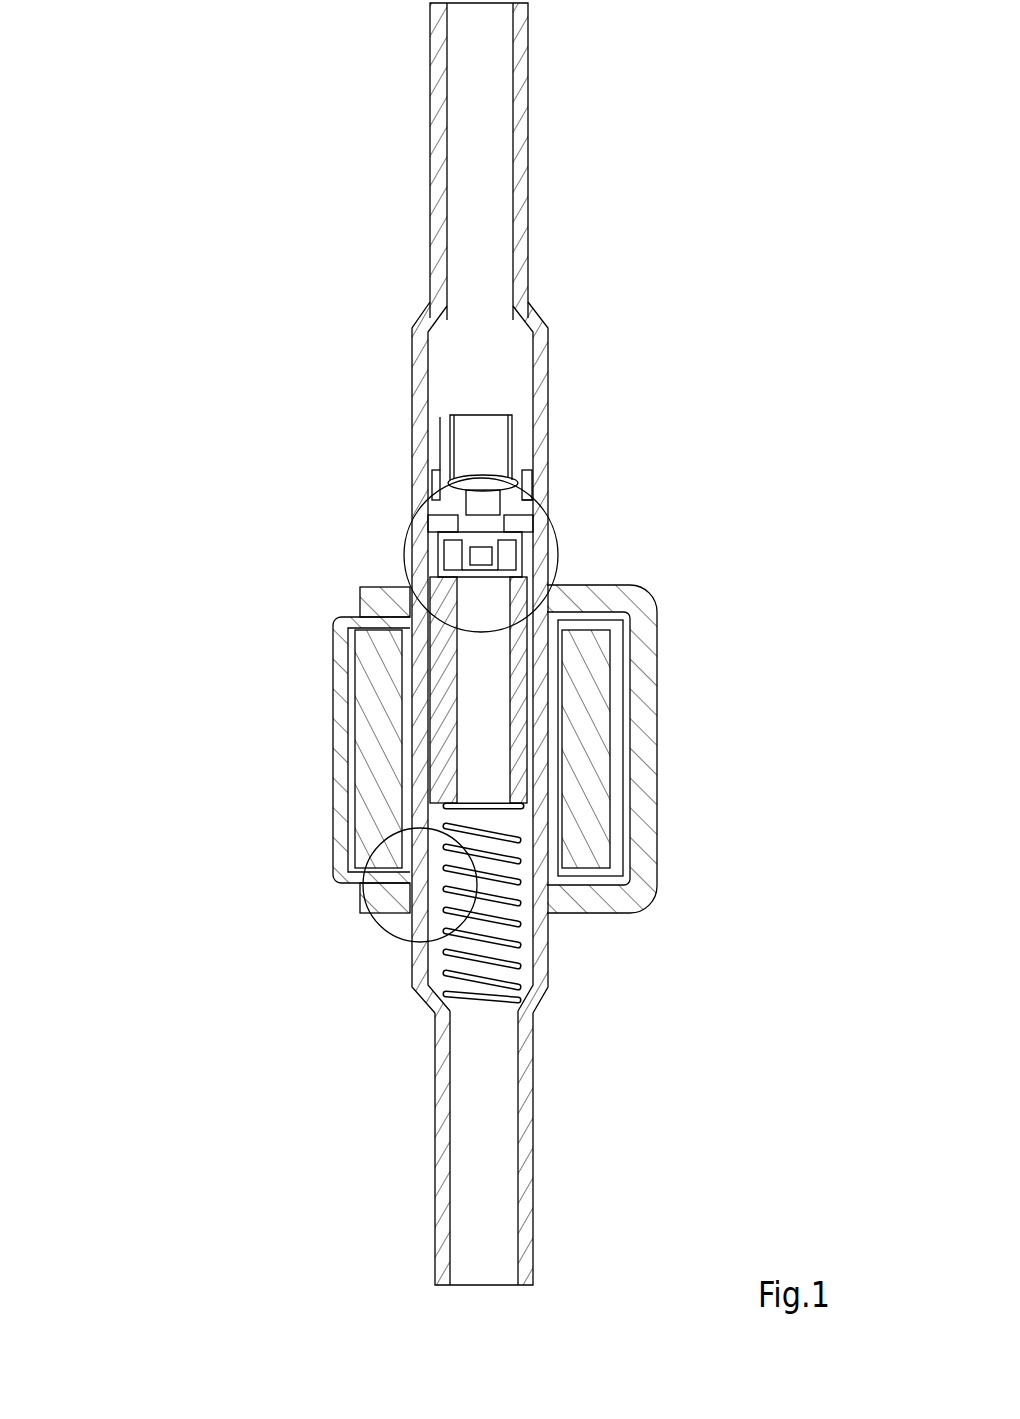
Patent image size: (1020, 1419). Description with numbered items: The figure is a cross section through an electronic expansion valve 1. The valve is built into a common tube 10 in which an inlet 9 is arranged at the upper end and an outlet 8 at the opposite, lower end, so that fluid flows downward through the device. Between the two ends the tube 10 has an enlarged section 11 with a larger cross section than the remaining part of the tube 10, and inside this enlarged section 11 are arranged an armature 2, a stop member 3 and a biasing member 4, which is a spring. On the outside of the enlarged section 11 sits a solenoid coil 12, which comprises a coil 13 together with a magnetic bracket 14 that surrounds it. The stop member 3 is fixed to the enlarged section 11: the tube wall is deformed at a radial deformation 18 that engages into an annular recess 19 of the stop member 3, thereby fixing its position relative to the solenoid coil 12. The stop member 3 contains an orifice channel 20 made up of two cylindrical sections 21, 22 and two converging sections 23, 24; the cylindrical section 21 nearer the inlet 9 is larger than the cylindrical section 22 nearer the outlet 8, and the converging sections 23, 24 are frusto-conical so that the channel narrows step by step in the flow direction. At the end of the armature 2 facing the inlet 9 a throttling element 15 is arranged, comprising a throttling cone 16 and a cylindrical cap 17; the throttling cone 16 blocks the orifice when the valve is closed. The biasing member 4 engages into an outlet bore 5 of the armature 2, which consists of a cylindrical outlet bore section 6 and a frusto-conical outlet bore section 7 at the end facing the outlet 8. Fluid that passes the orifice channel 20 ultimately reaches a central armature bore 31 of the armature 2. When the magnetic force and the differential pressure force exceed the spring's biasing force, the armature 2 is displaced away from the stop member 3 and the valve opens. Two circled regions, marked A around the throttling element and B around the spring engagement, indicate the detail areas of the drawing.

The electronic expansion valve 1 is at (197, 597).
The armature 2 is at (649, 589).
The stop member 3 is at (444, 440).
The biasing member 4 is at (540, 955).
The outlet bore 5 is at (595, 922).
The cylindrical outlet bore section 6 is at (575, 847).
The frusto-conical outlet bore section 7 is at (486, 844).
The outlet 8 is at (486, 1221).
The inlet 9 is at (486, 92).
The tube 10 is at (443, 1130).
The enlarged section 11 is at (543, 365).
The solenoid coil 12 is at (686, 682).
The coil 13 is at (380, 705).
The magnetic bracket 14 is at (645, 815).
The throttling element 15 is at (488, 576).
The throttling cone 16 is at (518, 548).
The cylindrical cap 17 is at (440, 572).
The radial deformation 18 is at (535, 497).
The annular recess 19 is at (537, 478).
The orifice channel 20 is at (514, 440).
The cylindrical section 21 is at (483, 458).
The cylindrical section 22 is at (452, 522).
The converging section 23 is at (434, 450).
The converging section 24 is at (440, 540).
The central armature bore 31 is at (487, 737).
The detail A is at (405, 570).
The detail B is at (377, 927).